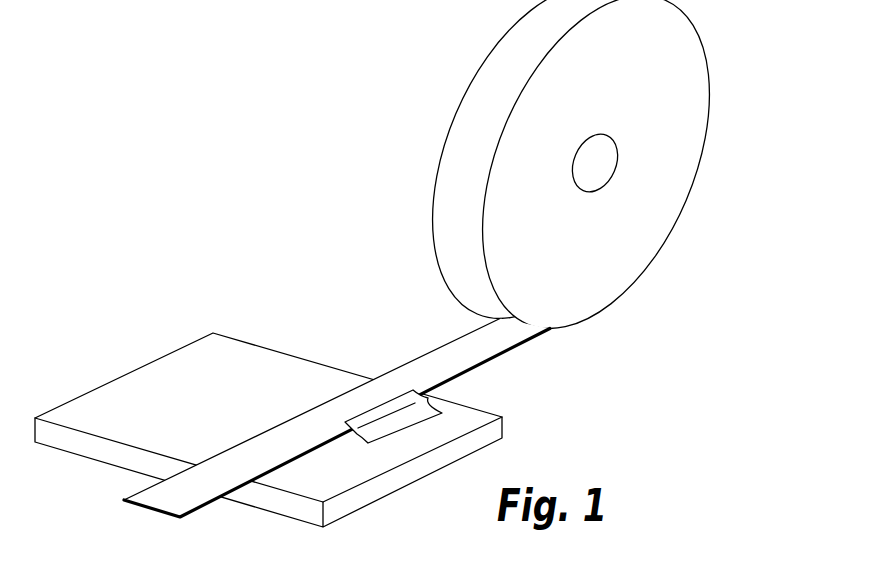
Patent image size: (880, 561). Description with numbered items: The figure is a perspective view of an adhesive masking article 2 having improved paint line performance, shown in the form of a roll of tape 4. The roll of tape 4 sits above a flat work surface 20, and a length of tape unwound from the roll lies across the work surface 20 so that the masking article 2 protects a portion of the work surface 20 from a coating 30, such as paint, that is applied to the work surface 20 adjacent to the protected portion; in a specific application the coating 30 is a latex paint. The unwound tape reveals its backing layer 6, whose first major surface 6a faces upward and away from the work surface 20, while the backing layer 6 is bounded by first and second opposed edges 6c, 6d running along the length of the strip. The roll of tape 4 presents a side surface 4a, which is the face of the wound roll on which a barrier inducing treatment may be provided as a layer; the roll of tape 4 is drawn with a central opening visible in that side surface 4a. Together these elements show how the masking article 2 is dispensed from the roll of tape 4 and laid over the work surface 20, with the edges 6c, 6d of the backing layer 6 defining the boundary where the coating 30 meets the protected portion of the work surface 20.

The adhesive masking article 2 is at (439, 277).
The roll of tape 4 is at (610, 280).
The side surface of the roll of tape 4a is at (655, 192).
The backing layer 6 is at (337, 437).
The first major surface 6a is at (273, 443).
The first edge 6c is at (213, 460).
The second edge 6d is at (197, 507).
The work surface 20 is at (173, 368).
The coating 30 is at (372, 434).